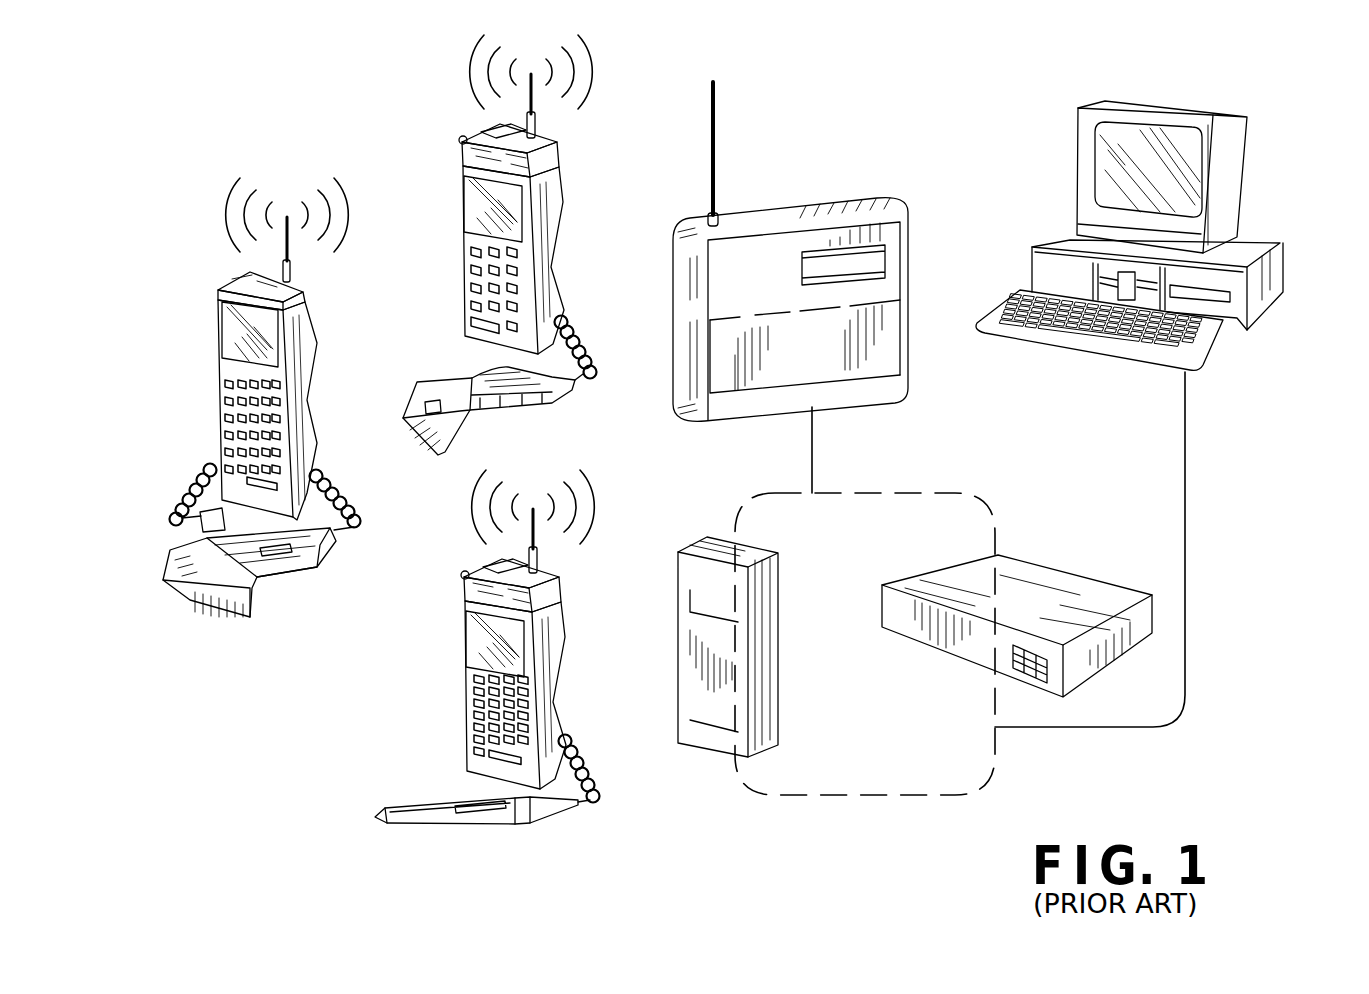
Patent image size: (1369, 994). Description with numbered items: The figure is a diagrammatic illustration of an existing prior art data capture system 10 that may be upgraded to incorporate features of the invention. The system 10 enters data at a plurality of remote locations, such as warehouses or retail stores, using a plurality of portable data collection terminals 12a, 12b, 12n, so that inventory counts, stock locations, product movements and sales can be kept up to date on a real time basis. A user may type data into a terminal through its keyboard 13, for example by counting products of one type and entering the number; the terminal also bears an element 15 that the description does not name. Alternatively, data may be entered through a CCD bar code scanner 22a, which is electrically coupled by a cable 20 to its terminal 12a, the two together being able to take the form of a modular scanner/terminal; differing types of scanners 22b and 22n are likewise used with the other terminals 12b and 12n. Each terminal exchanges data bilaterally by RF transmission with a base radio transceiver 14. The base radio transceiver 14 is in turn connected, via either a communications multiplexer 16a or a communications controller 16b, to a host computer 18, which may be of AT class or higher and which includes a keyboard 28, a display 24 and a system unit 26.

The data capture system 10 is at (292, 120).
The portable data collection terminal 12a is at (445, 200).
The portable data collection terminal 12b is at (204, 323).
The portable data collection terminal 12n is at (450, 598).
The keyboard 13 is at (213, 362).
The base radio transceiver 14 is at (911, 244).
The display 15 is at (272, 330).
The communications multiplexer 16a is at (665, 584).
The communications controller 16b is at (1045, 548).
The host computer 18 is at (1262, 148).
The cable 20 is at (356, 476).
The CCD bar code scanner 22a is at (512, 405).
The scanner 22b is at (262, 612).
The scanner 22n is at (442, 820).
The display 24 is at (1093, 118).
The system unit 26 is at (1262, 250).
The keyboard 28 is at (1207, 357).